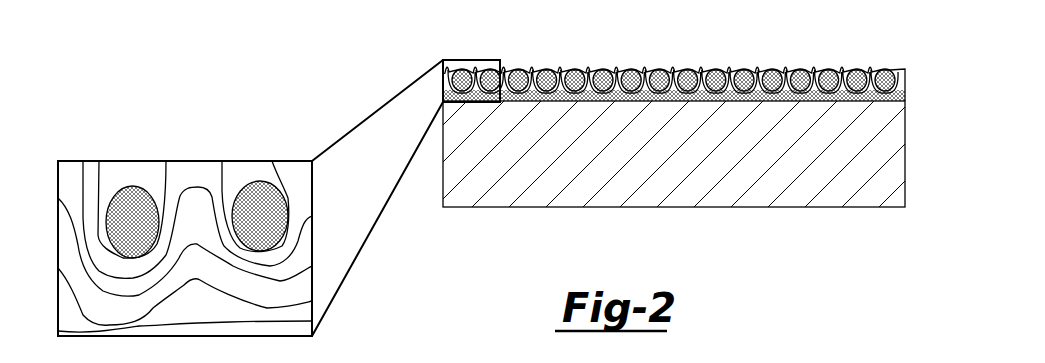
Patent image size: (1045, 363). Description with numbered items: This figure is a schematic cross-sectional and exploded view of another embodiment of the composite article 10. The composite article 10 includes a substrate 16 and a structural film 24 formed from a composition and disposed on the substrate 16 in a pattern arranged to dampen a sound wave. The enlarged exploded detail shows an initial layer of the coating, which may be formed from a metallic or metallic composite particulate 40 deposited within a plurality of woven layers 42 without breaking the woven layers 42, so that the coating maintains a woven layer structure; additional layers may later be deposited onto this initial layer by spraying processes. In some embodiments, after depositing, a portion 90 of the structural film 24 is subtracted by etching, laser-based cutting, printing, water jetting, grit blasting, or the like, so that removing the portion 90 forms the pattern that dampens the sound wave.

The composite article 10 is at (58, 146).
The substrate 16 is at (905, 165).
The structural film 24 is at (907, 87).
The metallic composite particulate 40 is at (137, 200).
The woven layers 42 is at (300, 292).
The portion of the structural film 90 is at (627, 61).